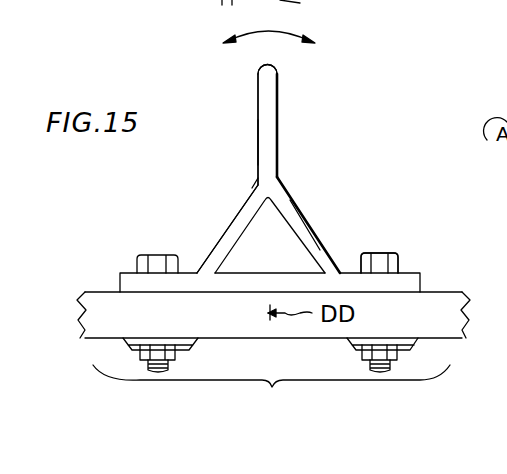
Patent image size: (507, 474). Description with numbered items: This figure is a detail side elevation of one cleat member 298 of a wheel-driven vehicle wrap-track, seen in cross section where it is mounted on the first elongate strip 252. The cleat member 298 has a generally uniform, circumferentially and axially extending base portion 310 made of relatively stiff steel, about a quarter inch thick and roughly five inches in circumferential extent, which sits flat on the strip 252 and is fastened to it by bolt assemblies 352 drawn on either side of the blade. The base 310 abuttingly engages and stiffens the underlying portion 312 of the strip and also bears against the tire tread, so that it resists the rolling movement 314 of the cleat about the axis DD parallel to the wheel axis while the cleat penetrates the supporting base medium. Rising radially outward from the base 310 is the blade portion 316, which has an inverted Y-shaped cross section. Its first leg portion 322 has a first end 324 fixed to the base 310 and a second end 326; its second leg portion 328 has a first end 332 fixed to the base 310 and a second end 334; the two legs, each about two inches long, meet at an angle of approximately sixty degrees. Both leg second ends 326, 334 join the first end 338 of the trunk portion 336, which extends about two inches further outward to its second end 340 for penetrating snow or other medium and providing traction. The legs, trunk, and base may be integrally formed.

The first elongate strip 252 is at (443, 316).
The cleat member 298 is at (343, 112).
The base portion 310 is at (293, 285).
The underlying portion of the strip 312 is at (310, 378).
The rolling movement 314 is at (275, 29).
The blade portion 316 is at (300, 151).
The first leg portion 322 is at (229, 226).
The first leg portion first end 324 is at (230, 258).
The first leg portion second end 326 is at (257, 188).
The second leg portion 328 is at (300, 223).
The second leg portion first end 332 is at (396, 262).
The second leg portion second end 334 is at (284, 190).
The trunk portion 336 is at (260, 99).
The trunk portion first end 338 is at (260, 163).
The trunk portion second end 340 is at (272, 71).
The bolt assemblies 352 is at (143, 257).